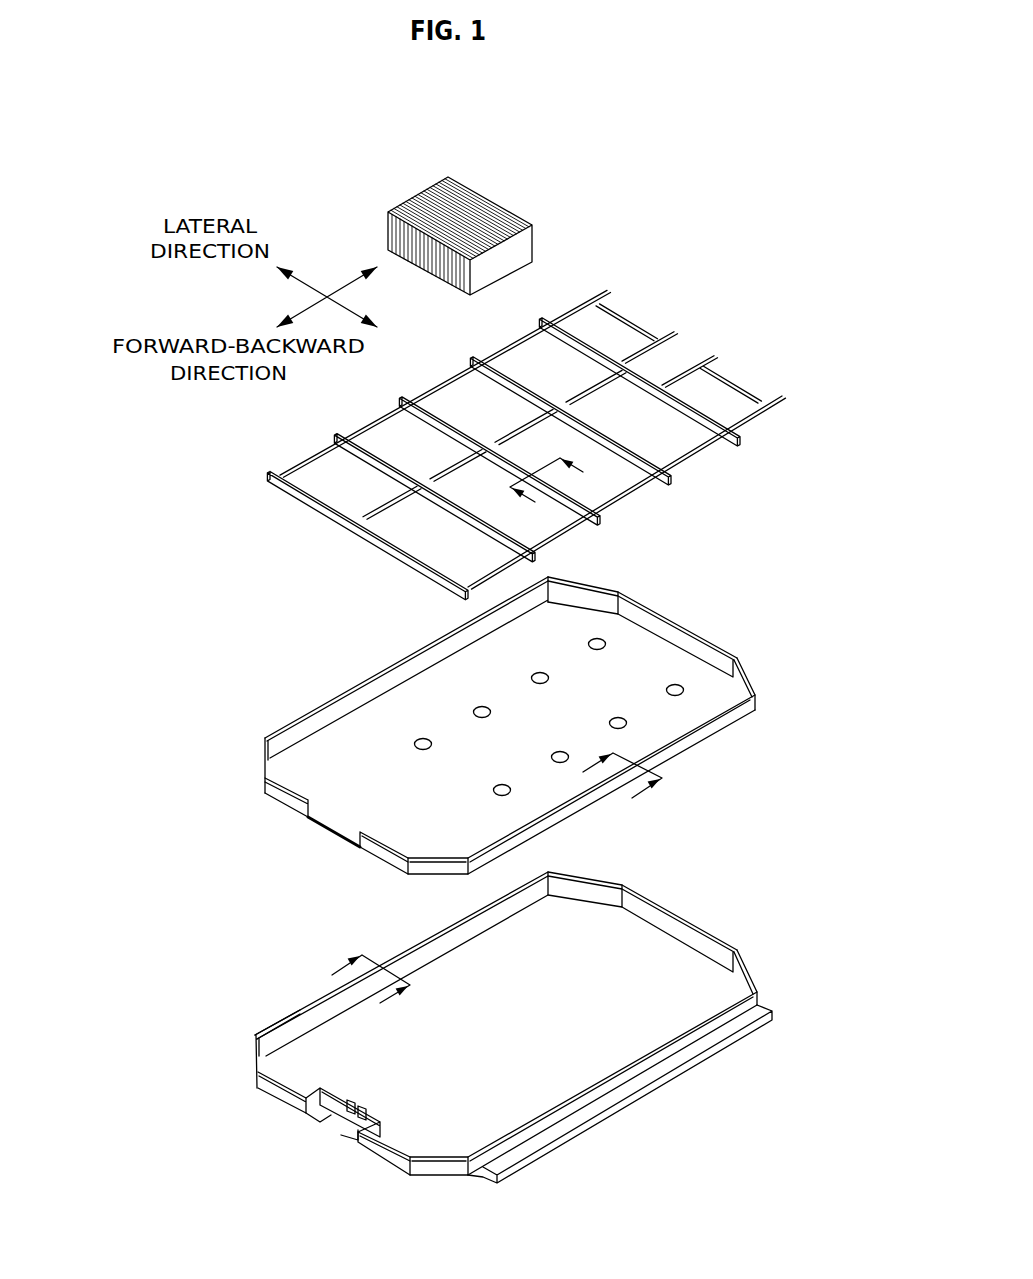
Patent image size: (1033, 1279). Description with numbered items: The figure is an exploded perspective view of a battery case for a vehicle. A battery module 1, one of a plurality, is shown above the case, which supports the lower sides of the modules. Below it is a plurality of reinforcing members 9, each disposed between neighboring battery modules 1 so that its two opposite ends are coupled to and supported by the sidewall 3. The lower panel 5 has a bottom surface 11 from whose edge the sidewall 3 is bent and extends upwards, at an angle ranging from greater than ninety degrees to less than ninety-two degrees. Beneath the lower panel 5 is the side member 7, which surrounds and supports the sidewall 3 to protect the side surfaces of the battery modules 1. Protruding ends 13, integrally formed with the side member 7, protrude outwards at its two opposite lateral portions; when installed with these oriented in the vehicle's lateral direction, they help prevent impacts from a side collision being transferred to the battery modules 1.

The battery module 1 is at (545, 215).
The sidewall 3 is at (338, 708).
The lower panel 5 is at (375, 657).
The side member 7 is at (650, 1108).
The reinforcing member 9 is at (600, 428).
The bottom surface 11 is at (637, 651).
The protruding end 13 is at (290, 1017).